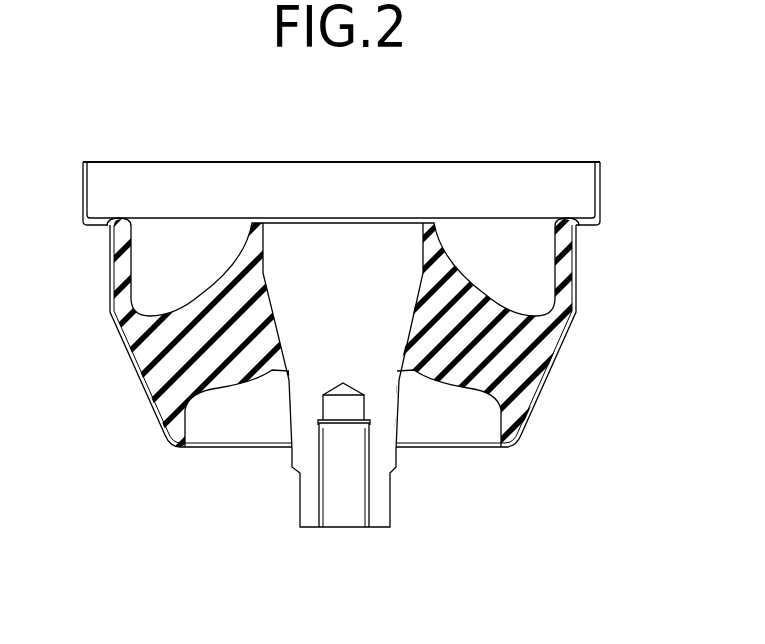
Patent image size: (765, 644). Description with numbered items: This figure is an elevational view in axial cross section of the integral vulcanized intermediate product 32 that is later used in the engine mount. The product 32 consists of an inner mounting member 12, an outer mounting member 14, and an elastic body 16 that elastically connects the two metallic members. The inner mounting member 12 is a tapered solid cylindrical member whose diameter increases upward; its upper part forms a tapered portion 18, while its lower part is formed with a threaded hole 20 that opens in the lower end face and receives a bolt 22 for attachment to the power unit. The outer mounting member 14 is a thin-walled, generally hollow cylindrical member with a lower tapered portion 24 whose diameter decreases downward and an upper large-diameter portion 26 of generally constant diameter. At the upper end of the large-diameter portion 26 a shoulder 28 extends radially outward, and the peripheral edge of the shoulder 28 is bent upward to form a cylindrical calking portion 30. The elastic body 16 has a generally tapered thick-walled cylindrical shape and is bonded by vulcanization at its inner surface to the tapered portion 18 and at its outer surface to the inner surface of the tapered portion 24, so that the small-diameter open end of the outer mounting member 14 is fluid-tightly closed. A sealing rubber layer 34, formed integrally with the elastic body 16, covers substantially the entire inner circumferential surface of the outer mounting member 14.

The inner mounting member 12 is at (398, 488).
The outer mounting member 14 is at (548, 410).
The elastic body 16 is at (220, 378).
The tapered portion 18 is at (416, 324).
The threaded hole 20 is at (332, 506).
The bolt 22 is at (349, 515).
The tapered portion 24 is at (141, 387).
The large-diameter portion 26 is at (111, 281).
The shoulder 28 is at (580, 225).
The calking portion 30 is at (82, 205).
The integral vulcanized intermediate product 32 is at (527, 117).
The sealing rubber layer 34 is at (122, 291).